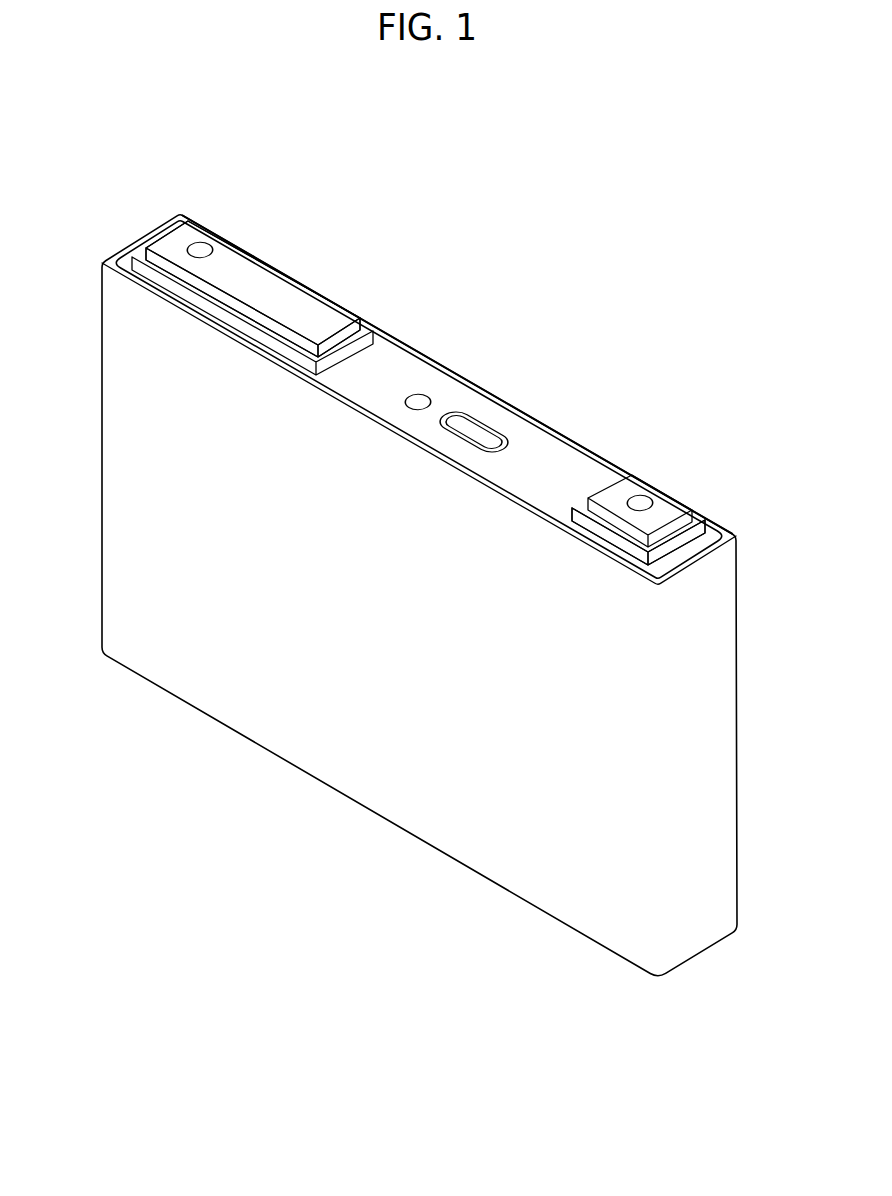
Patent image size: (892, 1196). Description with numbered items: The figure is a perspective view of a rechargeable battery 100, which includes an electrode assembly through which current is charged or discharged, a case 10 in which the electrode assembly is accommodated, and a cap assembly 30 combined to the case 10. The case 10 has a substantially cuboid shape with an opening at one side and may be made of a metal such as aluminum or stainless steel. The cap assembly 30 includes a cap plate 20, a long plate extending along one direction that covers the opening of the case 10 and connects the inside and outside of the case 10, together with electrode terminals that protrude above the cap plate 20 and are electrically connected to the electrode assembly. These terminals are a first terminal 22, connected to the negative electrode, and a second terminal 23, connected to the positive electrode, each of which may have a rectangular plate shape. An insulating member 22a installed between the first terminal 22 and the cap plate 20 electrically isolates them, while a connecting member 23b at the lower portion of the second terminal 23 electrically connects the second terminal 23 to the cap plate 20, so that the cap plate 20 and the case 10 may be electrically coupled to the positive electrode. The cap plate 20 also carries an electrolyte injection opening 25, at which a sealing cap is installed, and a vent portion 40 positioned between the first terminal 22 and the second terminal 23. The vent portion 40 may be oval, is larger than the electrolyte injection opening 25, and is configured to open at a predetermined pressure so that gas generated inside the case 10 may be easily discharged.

The rechargeable battery 100 is at (650, 284).
The case 10 is at (322, 762).
The cap plate 20 is at (402, 363).
The first terminal 22 is at (280, 285).
The insulating member 22a is at (361, 317).
The second terminal 23 is at (670, 503).
The connecting member 23b is at (697, 518).
The electrolyte injection opening 25 is at (423, 397).
The cap assembly 30 is at (558, 423).
The vent portion 40 is at (487, 412).